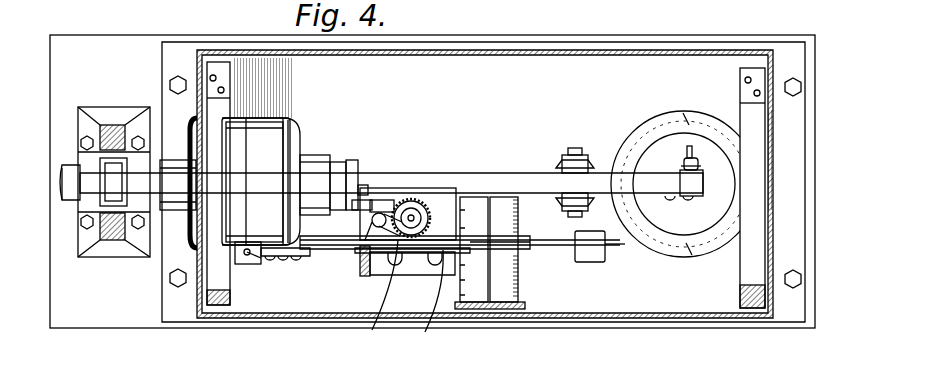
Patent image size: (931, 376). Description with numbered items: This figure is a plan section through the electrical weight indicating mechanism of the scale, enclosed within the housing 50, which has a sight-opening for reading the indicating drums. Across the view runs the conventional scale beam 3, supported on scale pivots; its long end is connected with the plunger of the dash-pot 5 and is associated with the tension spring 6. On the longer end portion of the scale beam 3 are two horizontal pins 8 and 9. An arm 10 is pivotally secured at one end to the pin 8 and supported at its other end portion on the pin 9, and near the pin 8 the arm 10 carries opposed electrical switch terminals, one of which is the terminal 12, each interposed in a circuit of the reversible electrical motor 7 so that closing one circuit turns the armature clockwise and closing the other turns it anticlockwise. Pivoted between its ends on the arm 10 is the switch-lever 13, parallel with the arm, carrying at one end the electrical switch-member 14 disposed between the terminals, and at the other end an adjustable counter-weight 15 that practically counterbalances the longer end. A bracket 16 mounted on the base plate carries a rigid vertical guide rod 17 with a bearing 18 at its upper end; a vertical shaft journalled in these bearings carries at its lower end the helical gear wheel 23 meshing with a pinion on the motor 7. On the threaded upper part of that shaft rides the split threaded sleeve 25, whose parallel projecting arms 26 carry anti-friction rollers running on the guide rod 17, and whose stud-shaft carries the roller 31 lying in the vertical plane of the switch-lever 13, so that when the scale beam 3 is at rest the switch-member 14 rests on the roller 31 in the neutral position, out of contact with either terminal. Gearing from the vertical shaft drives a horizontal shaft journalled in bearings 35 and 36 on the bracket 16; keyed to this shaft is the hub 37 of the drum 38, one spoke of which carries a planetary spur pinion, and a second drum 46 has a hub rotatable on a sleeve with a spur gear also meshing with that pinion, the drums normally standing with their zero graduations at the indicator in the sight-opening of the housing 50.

The scale beam 3 is at (592, 183).
The dash-pot 5 is at (656, 124).
The tension spring 6 is at (582, 196).
The electrical motor 7 is at (268, 170).
The horizontal pin 8 is at (230, 229).
The horizontal pin 9 is at (505, 230).
The arm 10 is at (315, 252).
The electrical switch terminal 12 is at (252, 264).
The switch-lever 13 is at (322, 256).
The electrical switch-member 14 is at (283, 262).
The adjustable counter-weight 15 is at (596, 260).
The bracket 16 is at (362, 162).
The vertical guide rod 17 is at (353, 270).
The bearing 18 is at (386, 234).
The gear wheel 23 is at (432, 204).
The threaded sleeve 25 is at (420, 206).
The projecting arms 26 is at (398, 200).
The roller 31 is at (432, 262).
The bearing 35 is at (372, 330).
The bearing 36 is at (425, 332).
The hub 37 is at (521, 262).
The drum 38 is at (522, 298).
The second drum 46 is at (480, 206).
The housing 50 is at (303, 318).